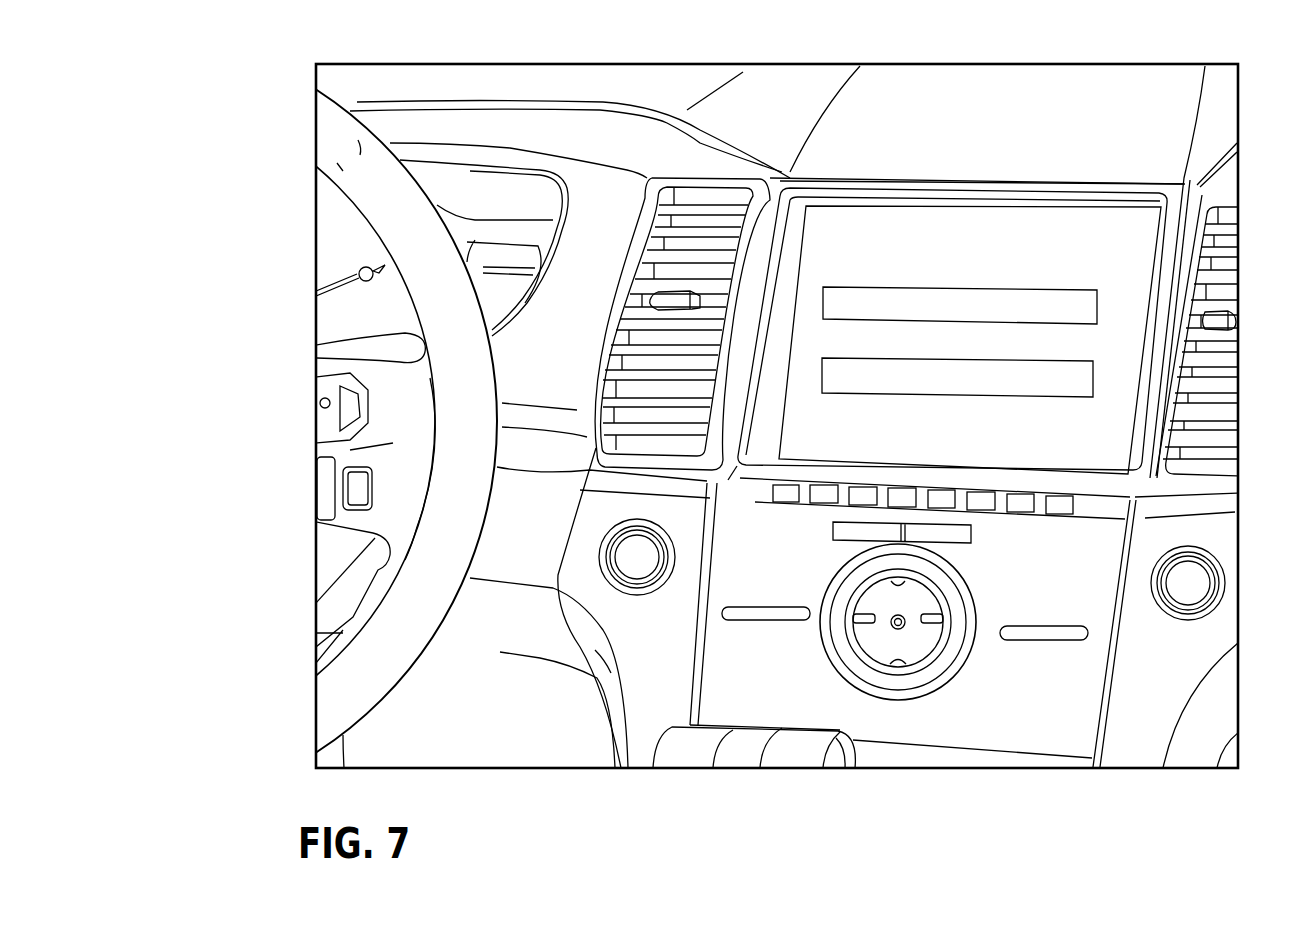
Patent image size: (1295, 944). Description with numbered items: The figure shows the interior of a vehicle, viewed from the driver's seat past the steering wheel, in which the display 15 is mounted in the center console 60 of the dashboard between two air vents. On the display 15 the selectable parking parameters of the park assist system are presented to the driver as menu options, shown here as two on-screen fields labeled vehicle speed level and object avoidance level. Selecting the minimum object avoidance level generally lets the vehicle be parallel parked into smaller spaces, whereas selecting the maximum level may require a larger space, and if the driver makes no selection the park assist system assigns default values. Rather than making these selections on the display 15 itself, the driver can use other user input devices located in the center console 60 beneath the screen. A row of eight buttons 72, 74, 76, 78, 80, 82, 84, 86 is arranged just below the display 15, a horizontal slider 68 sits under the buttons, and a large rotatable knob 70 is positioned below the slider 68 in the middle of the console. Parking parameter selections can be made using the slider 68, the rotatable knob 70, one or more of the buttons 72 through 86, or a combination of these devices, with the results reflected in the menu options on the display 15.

The display 15 is at (1108, 205).
The center console 60 is at (906, 166).
The slider 68 is at (960, 542).
The rotatable knob 70 is at (978, 650).
The button 72 is at (789, 504).
The button 74 is at (822, 485).
The button 76 is at (863, 487).
The button 78 is at (903, 488).
The button 80 is at (940, 490).
The button 82 is at (978, 492).
The button 84 is at (1018, 514).
The button 86 is at (1060, 516).